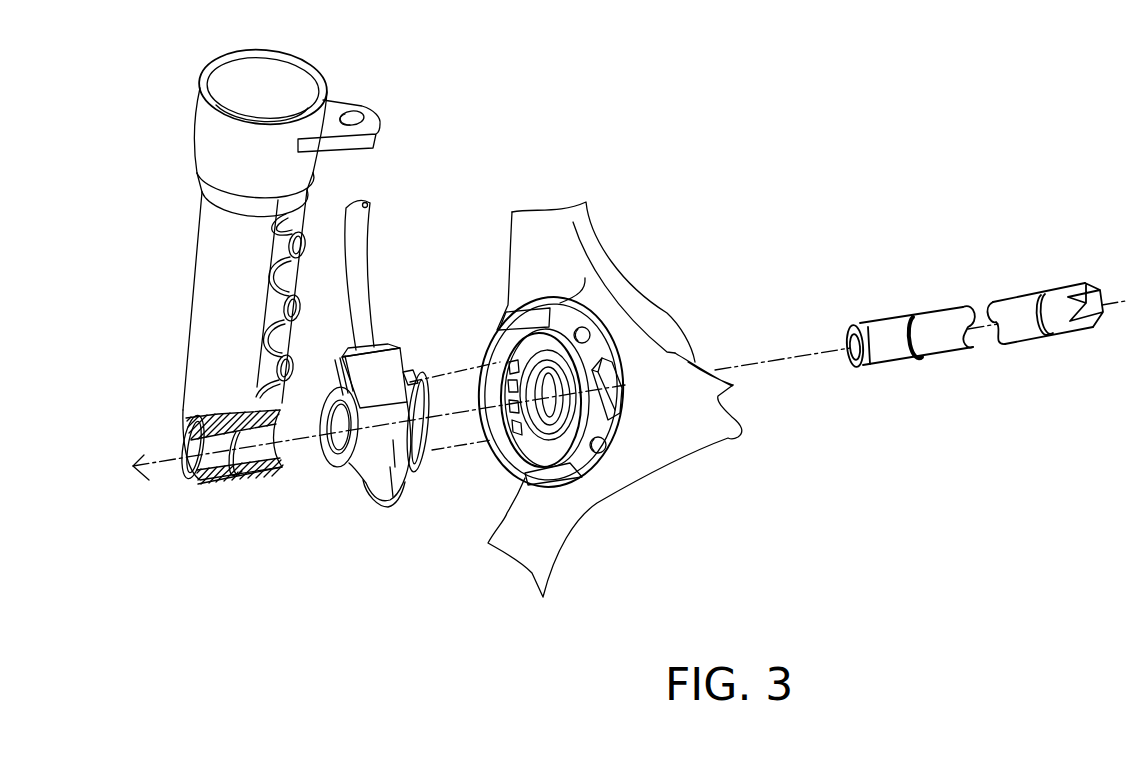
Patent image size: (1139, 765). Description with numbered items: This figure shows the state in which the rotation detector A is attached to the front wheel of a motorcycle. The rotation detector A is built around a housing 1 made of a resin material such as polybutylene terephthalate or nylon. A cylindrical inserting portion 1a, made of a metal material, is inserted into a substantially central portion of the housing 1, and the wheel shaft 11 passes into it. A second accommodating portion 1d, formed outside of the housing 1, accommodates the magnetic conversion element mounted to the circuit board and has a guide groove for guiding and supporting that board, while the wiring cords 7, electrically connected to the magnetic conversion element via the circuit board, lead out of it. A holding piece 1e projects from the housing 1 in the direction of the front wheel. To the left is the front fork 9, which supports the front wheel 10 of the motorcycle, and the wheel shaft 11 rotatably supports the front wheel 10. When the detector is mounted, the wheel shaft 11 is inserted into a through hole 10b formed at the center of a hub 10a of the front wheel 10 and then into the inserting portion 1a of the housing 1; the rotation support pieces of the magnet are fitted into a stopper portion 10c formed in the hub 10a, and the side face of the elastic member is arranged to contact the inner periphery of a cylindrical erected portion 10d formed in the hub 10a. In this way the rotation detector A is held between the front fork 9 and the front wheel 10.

The housing 1 is at (369, 407).
The inserting portion 1a is at (343, 458).
The second accommodating portion 1d is at (390, 360).
The holding piece 1e is at (390, 497).
The wiring cords 7 is at (358, 282).
The front fork 9 is at (207, 320).
The front wheel 10 is at (577, 399).
The hub 10a is at (580, 512).
The through hole 10b is at (520, 345).
The stopper portion 10c is at (505, 363).
The cylindrical erected portion 10d is at (577, 448).
The wheel shaft 11 is at (947, 348).
The rotation detector A is at (353, 503).